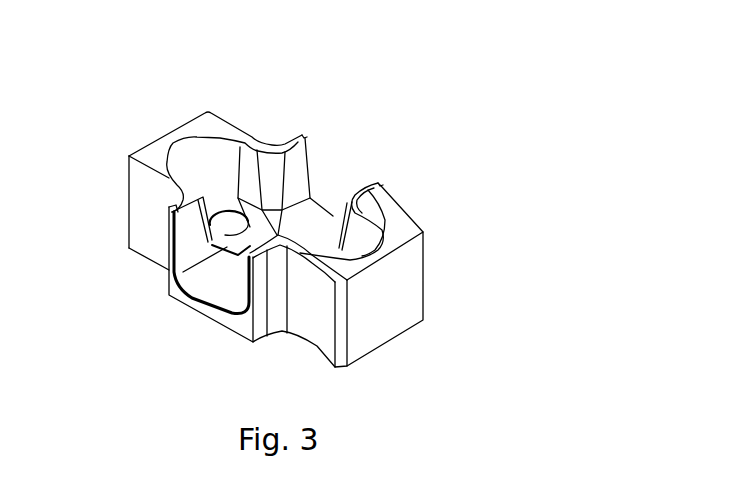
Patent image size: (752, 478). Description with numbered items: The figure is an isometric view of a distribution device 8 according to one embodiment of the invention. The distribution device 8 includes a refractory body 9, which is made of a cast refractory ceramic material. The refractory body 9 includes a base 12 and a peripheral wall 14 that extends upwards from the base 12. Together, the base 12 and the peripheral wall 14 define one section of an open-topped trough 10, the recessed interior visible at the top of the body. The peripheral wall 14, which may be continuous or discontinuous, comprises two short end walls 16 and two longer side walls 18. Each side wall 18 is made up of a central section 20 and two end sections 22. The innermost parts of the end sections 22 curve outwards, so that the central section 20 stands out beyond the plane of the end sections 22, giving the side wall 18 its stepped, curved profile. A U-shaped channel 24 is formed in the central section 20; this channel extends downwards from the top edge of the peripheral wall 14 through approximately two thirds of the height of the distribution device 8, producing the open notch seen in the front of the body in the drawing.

The distribution device 8 is at (402, 98).
The refractory body 9 is at (158, 138).
The open-topped trough 10 is at (228, 181).
The base 12 is at (325, 227).
The peripheral wall 14 is at (303, 335).
The end wall 16 is at (388, 320).
The side wall 18 is at (137, 225).
The central section 20 is at (248, 332).
The end section 22 is at (135, 203).
The U-shaped channel 24 is at (298, 155).